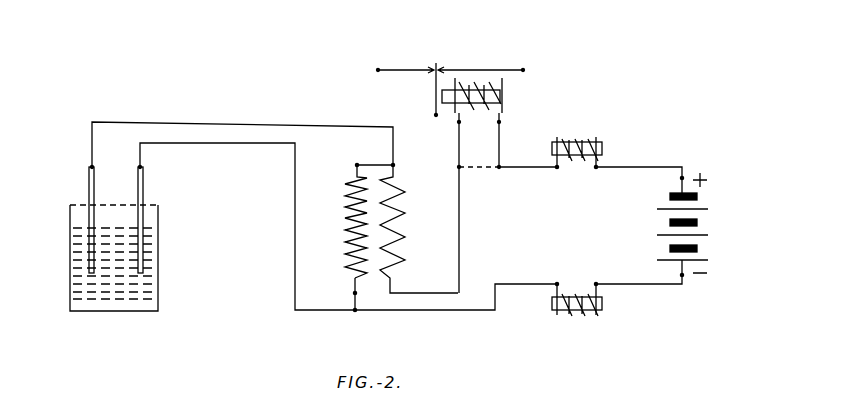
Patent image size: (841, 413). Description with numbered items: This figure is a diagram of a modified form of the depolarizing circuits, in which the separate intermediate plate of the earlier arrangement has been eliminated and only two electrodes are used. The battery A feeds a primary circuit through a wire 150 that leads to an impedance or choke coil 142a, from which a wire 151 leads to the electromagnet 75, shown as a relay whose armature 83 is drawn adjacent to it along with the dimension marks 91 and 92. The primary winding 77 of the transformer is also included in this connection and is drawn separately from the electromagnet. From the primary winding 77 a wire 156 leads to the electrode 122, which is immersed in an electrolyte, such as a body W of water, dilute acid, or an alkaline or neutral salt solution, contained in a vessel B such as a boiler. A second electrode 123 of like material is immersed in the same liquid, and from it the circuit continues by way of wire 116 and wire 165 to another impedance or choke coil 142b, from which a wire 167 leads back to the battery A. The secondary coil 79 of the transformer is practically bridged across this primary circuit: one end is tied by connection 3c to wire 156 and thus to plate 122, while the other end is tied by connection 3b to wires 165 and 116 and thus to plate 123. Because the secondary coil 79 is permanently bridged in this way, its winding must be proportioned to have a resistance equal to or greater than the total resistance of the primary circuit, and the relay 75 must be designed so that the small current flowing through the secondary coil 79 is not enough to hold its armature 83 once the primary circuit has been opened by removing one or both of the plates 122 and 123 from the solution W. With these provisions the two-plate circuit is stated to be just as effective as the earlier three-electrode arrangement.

The vessel B is at (114, 271).
The body of water W is at (114, 269).
The electrode 122 is at (88, 189).
The electrode 123 is at (150, 182).
The wire 156 is at (283, 123).
The wire 116 is at (257, 145).
The wire 165 is at (470, 316).
The connection 3c is at (379, 159).
The connection 3b is at (350, 301).
The secondary coil 79 is at (349, 217).
The primary winding 77 is at (419, 229).
The electromagnet 75 is at (385, 291).
The armature 83 is at (424, 90).
The distance 91 is at (406, 60).
The distance 92 is at (481, 60).
The wire 151 is at (545, 172).
The impedance or choke coil 142a is at (577, 163).
The wire 150 is at (619, 171).
The battery A is at (692, 223).
The wire 167 is at (638, 283).
The impedance or choke coil 142b is at (577, 309).